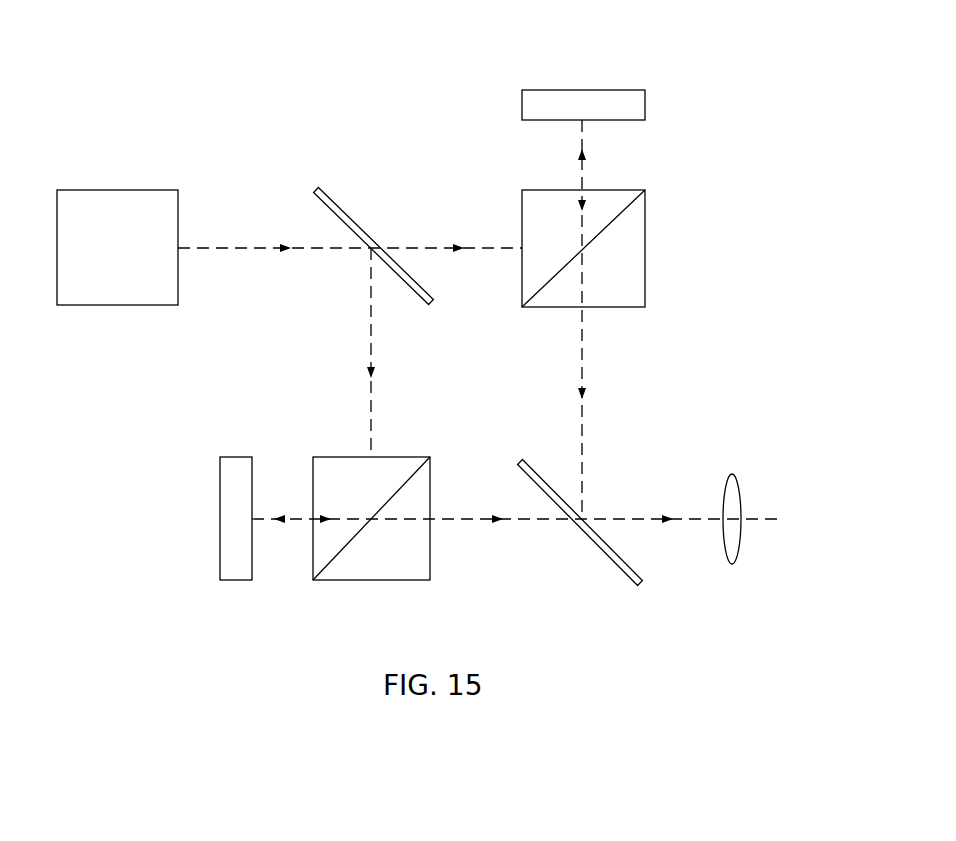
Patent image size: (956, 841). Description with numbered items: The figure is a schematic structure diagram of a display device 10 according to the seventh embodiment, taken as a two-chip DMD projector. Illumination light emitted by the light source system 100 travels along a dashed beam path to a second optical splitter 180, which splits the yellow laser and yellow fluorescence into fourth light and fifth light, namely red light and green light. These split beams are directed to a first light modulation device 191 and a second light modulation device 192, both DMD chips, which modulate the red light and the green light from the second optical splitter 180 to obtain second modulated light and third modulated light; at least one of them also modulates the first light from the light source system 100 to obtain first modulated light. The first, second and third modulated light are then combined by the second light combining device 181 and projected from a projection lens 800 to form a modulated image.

The display device 10 is at (422, 53).
The light source system 100 is at (97, 190).
The first light modulation device 191 is at (635, 105).
The second optical splitter 180 is at (342, 203).
The second light modulation device 192 is at (232, 518).
The second light combining device 181 is at (613, 557).
The projection lens 800 is at (740, 490).